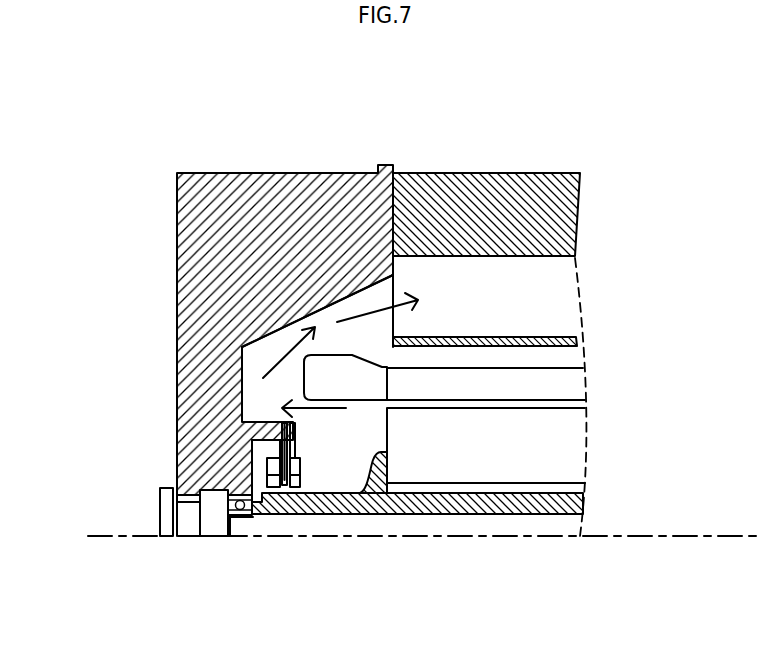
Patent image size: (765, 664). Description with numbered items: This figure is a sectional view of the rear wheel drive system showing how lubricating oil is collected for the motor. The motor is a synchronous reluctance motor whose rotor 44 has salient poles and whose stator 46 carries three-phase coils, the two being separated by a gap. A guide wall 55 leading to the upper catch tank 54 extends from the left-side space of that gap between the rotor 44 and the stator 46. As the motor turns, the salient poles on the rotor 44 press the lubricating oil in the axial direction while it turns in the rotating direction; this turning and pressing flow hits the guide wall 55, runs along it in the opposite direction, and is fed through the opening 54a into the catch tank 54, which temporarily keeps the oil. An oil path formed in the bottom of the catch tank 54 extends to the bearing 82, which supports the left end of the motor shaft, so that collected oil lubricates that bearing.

The guide wall 55 is at (327, 322).
The opening 54a is at (395, 282).
The catch tank 54 is at (530, 271).
The stator 46 is at (540, 381).
The rotor 44 is at (540, 443).
The bearing 82 is at (240, 517).